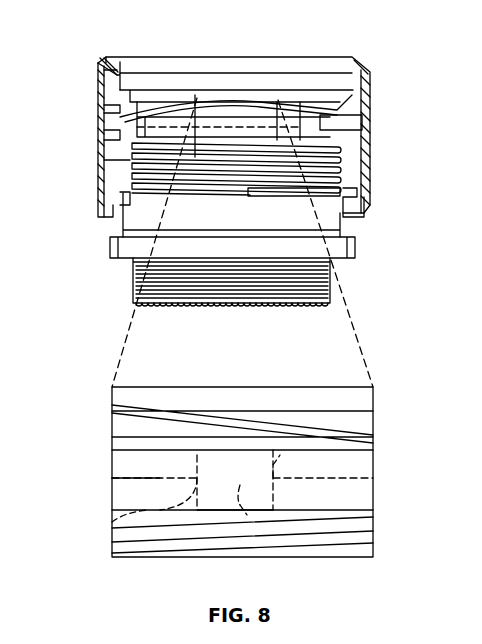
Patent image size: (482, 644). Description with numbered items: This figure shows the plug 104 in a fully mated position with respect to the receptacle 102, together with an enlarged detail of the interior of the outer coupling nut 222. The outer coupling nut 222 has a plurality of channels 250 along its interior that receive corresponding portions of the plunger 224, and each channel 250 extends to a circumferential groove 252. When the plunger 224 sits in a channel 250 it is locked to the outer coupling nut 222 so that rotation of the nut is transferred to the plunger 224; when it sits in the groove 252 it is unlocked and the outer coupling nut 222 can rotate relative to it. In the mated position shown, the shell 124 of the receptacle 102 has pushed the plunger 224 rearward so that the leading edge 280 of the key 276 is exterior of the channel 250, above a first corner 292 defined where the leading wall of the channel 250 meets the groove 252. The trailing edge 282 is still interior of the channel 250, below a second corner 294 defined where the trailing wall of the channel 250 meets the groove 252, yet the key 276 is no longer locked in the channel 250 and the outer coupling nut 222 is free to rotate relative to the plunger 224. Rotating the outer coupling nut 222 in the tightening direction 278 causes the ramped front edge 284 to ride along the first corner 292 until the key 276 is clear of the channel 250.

The receptacle 102 is at (106, 290).
The plug 104 is at (90, 53).
The shell 124 is at (135, 217).
The outer coupling nut 222 is at (110, 90).
The plunger 224 is at (343, 102).
The channel 250 is at (220, 502).
The circumferential groove 252 is at (158, 465).
The key 276 is at (240, 490).
The tightening direction 278 is at (392, 156).
The leading edge 280 is at (275, 462).
The trailing edge 282 is at (197, 465).
The ramped front edge 284 is at (245, 512).
The first corner 292 is at (273, 470).
The second corner 294 is at (112, 522).